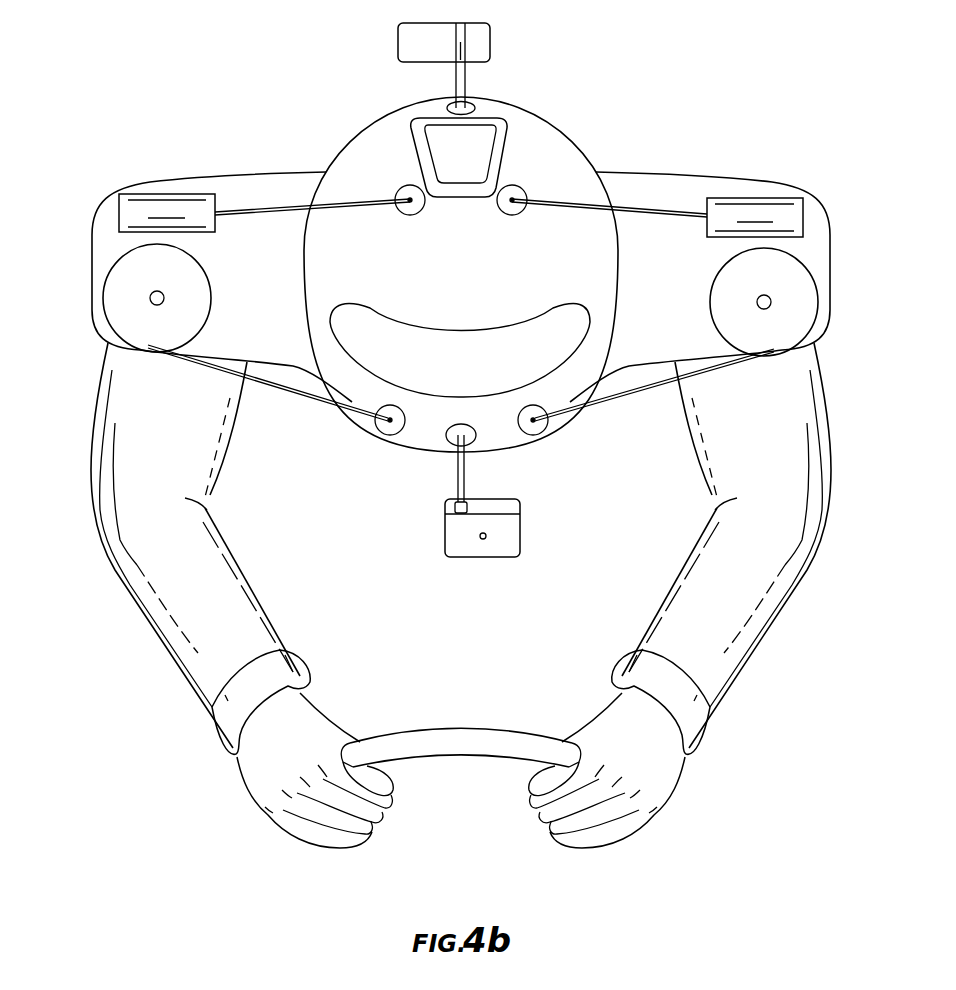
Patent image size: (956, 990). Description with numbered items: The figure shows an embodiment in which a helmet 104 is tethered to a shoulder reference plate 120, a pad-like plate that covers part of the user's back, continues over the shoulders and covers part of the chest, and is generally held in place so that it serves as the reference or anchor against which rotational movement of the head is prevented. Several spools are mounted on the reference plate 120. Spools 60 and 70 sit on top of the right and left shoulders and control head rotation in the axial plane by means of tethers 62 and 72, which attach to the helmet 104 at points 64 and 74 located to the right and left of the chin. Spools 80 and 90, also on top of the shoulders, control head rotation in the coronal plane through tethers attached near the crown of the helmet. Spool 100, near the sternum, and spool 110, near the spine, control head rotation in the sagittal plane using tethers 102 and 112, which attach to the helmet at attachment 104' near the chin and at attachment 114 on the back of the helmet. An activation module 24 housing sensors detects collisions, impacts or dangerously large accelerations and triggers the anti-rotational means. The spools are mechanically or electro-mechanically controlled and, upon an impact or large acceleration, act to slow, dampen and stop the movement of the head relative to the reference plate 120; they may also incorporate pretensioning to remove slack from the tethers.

The activation module 24 is at (427, 155).
The spool 60 is at (115, 306).
The tether 62 is at (305, 401).
The attachment point 64 is at (388, 428).
The spool 70 is at (810, 307).
The tether 72 is at (592, 404).
The attachment point 74 is at (535, 430).
The spool 80 is at (160, 194).
The spool 90 is at (760, 198).
The spool 100 is at (470, 548).
The tether 102 is at (457, 470).
The helmet 104 is at (461, 274).
The attachment 104' is at (442, 422).
The spool 110 is at (408, 37).
The tether 112 is at (465, 81).
The attachment 114 is at (475, 108).
The shoulder reference plate 120 is at (640, 196).